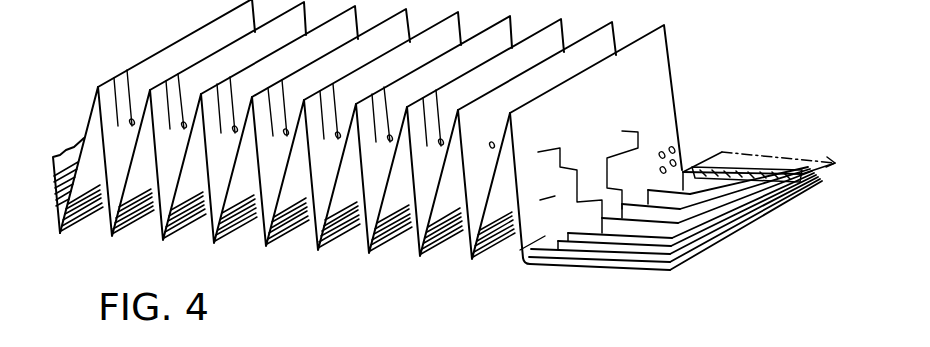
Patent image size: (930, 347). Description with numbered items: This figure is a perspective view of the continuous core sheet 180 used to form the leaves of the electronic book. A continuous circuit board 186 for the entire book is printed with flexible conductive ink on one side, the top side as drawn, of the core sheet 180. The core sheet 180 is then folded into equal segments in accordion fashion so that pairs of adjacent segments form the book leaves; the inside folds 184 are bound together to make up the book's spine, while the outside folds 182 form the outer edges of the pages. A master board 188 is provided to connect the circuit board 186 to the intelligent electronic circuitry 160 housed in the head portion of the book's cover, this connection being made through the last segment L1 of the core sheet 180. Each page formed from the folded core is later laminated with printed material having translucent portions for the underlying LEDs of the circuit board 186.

The continuous core sheet 180 is at (708, 40).
The outside folds 182 is at (190, 64).
The inside folds 184 is at (437, 257).
The continuous circuit board 186 is at (737, 212).
The master board 188 is at (757, 168).
The intelligent electronic circuitry 160 is at (783, 154).
The last segment of the core sheet L1 is at (712, 240).